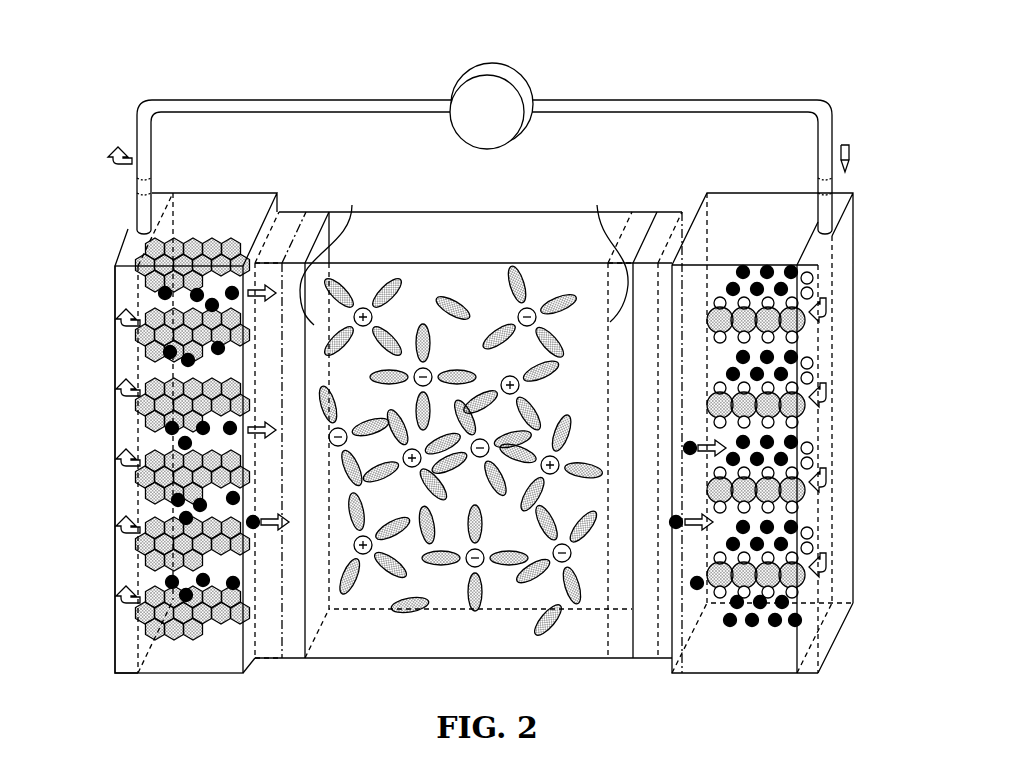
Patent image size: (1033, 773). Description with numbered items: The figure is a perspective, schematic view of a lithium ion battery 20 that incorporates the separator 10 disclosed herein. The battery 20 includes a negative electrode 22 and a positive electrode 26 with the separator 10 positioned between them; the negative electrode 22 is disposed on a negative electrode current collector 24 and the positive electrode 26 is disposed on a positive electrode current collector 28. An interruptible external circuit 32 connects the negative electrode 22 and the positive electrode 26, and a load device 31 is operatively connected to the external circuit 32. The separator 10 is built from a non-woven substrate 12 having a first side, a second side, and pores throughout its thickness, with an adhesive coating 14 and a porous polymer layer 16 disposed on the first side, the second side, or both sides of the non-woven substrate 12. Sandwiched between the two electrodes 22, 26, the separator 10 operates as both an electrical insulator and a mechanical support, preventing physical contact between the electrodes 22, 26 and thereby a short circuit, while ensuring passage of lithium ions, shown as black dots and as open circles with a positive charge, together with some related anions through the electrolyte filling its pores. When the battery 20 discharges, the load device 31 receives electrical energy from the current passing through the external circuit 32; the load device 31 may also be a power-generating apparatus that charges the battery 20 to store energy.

The separator 10 is at (543, 190).
The non-woven substrate 12 is at (416, 246).
The adhesive coating 14 is at (314, 220).
The porous polymer layer 16 is at (291, 222).
The lithium ion battery 20 is at (773, 72).
The negative electrode 22 is at (197, 655).
The negative electrode current collector 24 is at (133, 664).
The positive electrode 26 is at (750, 656).
The positive electrode current collector 28 is at (805, 672).
The load device 31 is at (492, 63).
The external circuit 32 is at (322, 99).